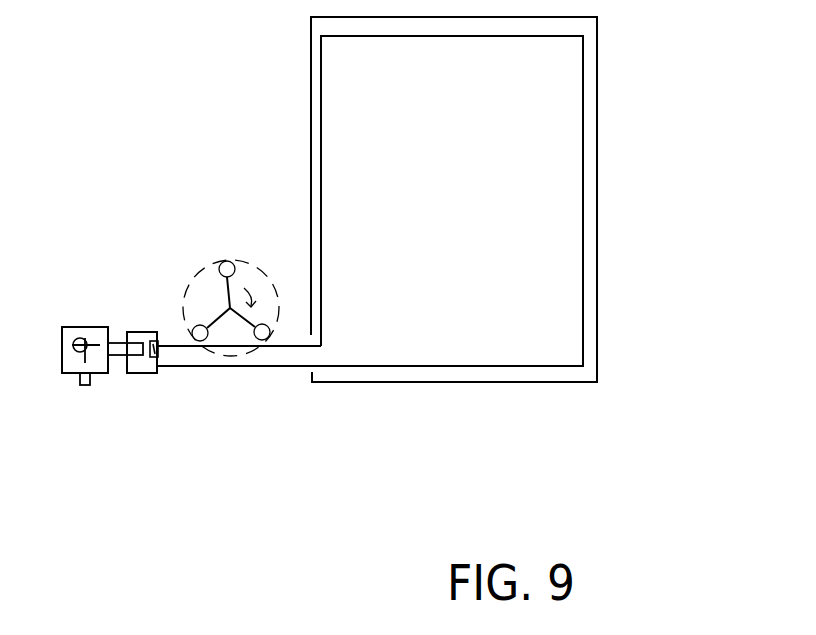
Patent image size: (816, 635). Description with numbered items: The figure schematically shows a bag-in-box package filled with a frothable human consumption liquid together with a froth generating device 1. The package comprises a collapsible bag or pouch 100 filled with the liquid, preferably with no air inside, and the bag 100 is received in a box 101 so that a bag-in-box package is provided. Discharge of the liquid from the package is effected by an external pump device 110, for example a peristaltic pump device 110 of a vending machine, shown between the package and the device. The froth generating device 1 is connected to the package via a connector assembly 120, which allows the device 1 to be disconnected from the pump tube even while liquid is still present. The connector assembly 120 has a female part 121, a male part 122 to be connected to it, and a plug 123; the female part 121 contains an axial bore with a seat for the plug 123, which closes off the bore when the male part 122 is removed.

The froth generating device 1 is at (88, 312).
The collapsible bag 100 is at (563, 203).
The box 101 is at (597, 133).
The external pump device 110 is at (197, 250).
The connector assembly 120 is at (150, 325).
The female part 121 is at (140, 373).
The male part 122 is at (120, 352).
The plug 123 is at (152, 373).